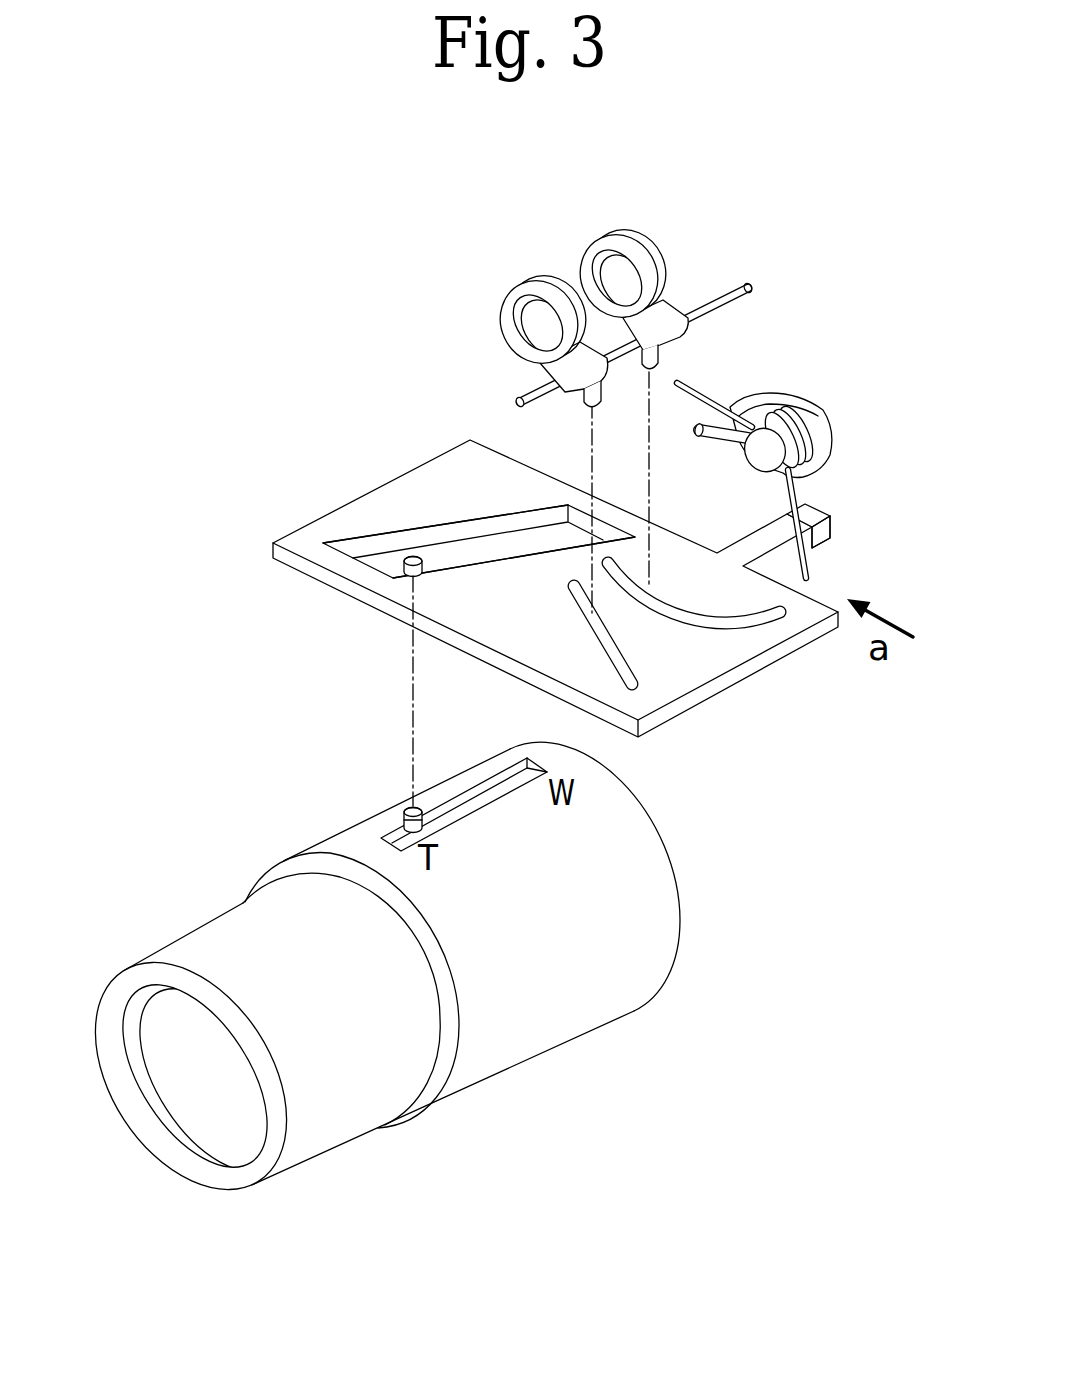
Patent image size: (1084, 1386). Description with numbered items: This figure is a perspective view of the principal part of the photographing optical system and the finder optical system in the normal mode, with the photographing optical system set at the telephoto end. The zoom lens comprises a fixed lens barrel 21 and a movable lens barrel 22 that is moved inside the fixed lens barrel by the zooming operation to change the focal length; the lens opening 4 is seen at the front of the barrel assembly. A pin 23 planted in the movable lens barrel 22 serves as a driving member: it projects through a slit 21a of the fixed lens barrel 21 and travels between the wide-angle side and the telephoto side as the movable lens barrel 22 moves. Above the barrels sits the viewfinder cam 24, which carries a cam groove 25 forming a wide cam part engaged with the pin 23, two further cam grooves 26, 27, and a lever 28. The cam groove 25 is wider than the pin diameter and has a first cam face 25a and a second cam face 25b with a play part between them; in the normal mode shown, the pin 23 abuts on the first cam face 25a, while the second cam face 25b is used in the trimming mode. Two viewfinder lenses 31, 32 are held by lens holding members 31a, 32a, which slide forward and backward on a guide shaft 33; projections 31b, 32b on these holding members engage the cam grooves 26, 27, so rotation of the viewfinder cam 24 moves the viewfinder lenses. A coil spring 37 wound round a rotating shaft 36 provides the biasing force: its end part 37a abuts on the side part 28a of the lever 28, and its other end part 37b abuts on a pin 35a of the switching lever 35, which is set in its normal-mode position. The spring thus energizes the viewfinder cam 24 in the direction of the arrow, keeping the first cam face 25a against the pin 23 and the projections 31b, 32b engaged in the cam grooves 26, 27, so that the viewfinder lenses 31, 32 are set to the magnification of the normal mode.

The bore 4 is at (213, 1107).
The fixed lens barrel 21 is at (577, 1012).
The slit 21a is at (498, 779).
The movable lens barrel 22 is at (333, 1117).
The pin 23 is at (400, 566).
The viewfinder cam 24 is at (355, 515).
The cam groove 25 is at (528, 540).
The first cam face 25a is at (467, 555).
The second cam face 25b is at (443, 535).
The cam groove 26 is at (645, 686).
The cam groove 27 is at (770, 612).
The lever 28 is at (813, 513).
The side part 28a is at (817, 540).
The viewfinder lens 31 is at (494, 326).
The lens holding member 31a is at (502, 322).
The projection 31b is at (590, 405).
The viewfinder lens 32 is at (674, 264).
The lens holding member 32a is at (647, 257).
The projection 32b is at (658, 352).
The guide shaft 33 is at (750, 290).
The switching lever 35 is at (813, 410).
The pin 35a is at (715, 425).
The rotating shaft 36 is at (760, 453).
The coil spring 37 is at (807, 442).
The end part 37a is at (810, 572).
The other end part 37b is at (700, 384).